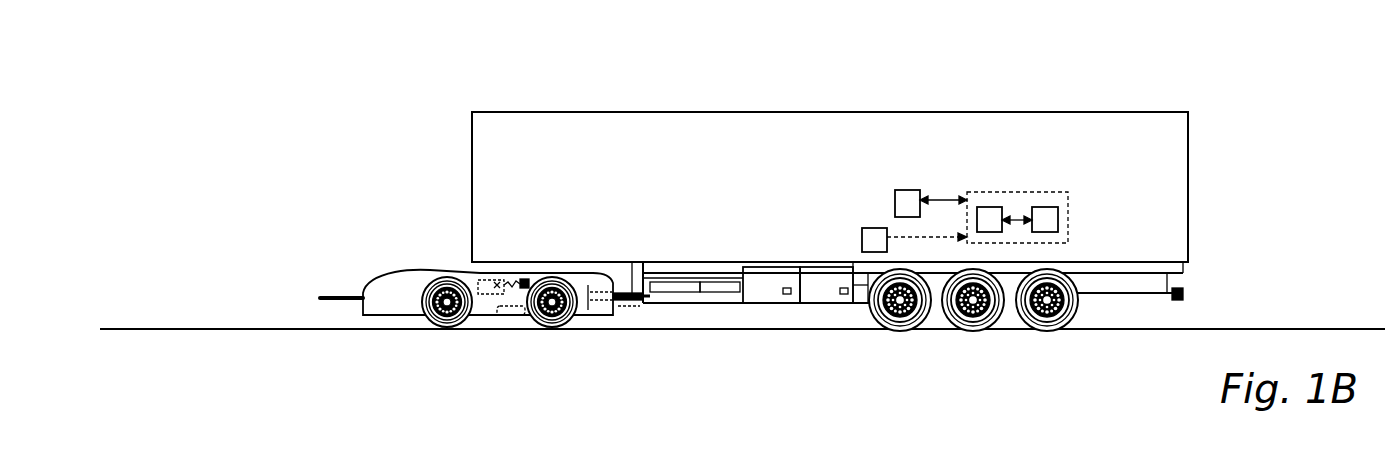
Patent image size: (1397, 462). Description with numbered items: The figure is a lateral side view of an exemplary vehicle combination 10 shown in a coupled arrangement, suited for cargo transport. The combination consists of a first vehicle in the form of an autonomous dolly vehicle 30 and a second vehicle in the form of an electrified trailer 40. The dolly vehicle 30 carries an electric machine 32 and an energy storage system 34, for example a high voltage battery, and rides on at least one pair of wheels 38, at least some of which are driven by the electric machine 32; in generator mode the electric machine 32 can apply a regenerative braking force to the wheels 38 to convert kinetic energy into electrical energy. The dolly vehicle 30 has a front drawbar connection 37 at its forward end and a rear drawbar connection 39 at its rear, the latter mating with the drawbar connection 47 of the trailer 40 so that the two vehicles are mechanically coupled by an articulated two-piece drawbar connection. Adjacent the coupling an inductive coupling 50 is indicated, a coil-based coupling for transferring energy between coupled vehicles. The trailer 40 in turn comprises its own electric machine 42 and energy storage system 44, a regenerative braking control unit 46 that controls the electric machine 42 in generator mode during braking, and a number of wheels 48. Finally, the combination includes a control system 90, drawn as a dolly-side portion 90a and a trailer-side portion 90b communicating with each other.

The vehicle combination 10 is at (372, 86).
The autonomous dolly vehicle 30 is at (523, 279).
The electric machine 32 is at (482, 268).
The energy storage system 34 is at (502, 268).
The front drawbar connection 37 is at (330, 296).
The wheels 38 is at (445, 322).
The rear drawbar connection 39 is at (622, 268).
The electrified trailer 40 is at (1103, 88).
The electric machine 42 is at (990, 208).
The energy storage system 44 is at (1045, 208).
The regenerative braking control unit 46 is at (868, 228).
The drawbar connection 47 is at (623, 298).
The wheels 48 is at (1047, 322).
The inductive coupling 50 is at (628, 306).
The control system 90 is at (567, 243).
The communication unit of towing vehicle 90a is at (528, 268).
The communication unit of trailer 90b is at (905, 190).